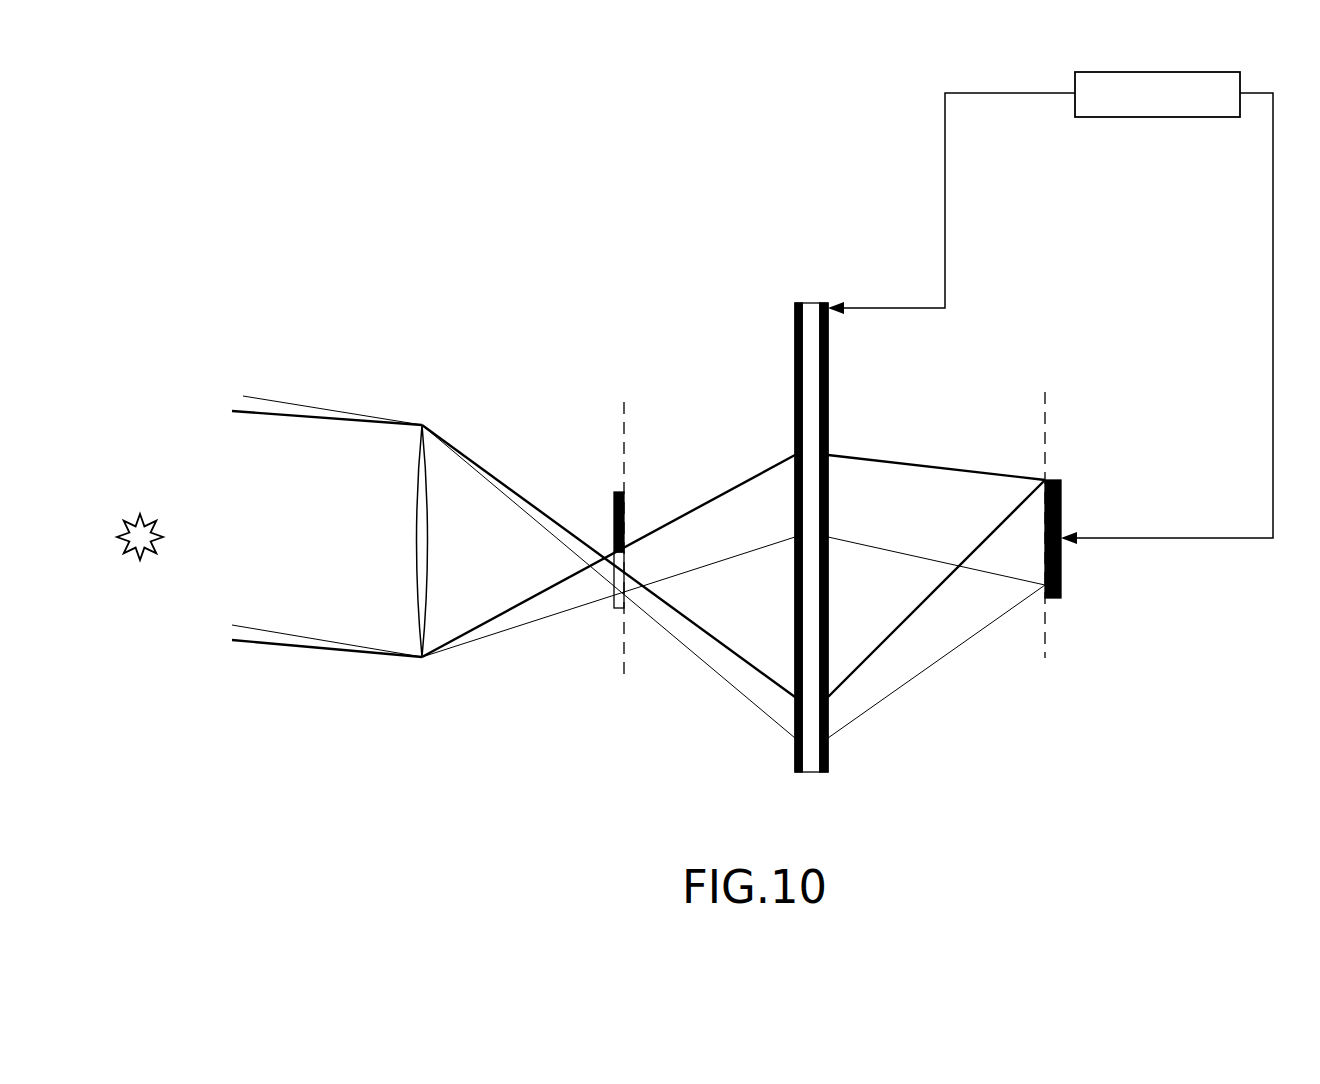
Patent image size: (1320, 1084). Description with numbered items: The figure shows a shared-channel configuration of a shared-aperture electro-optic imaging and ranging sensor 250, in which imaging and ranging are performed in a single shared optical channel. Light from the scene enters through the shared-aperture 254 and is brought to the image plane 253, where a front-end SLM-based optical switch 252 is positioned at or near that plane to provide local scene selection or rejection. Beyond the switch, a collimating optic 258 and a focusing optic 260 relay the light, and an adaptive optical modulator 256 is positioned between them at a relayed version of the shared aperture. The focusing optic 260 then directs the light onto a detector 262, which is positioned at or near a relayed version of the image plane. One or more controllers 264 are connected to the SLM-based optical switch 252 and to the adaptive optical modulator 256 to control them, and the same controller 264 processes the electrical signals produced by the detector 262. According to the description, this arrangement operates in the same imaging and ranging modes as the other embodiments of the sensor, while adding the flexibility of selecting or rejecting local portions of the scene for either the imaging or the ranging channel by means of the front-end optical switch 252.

The shared-aperture electro-optic imaging and ranging sensor 250 is at (463, 252).
The SLM-based optical switch 252 is at (613, 541).
The image plane 253 is at (624, 410).
The shared-aperture 254 is at (422, 660).
The adaptive optical modulator 256 is at (811, 303).
The collimating optic 258 is at (800, 775).
The focusing optic 260 is at (823, 775).
The detector 262 is at (1058, 600).
The controller 264 is at (1145, 118).